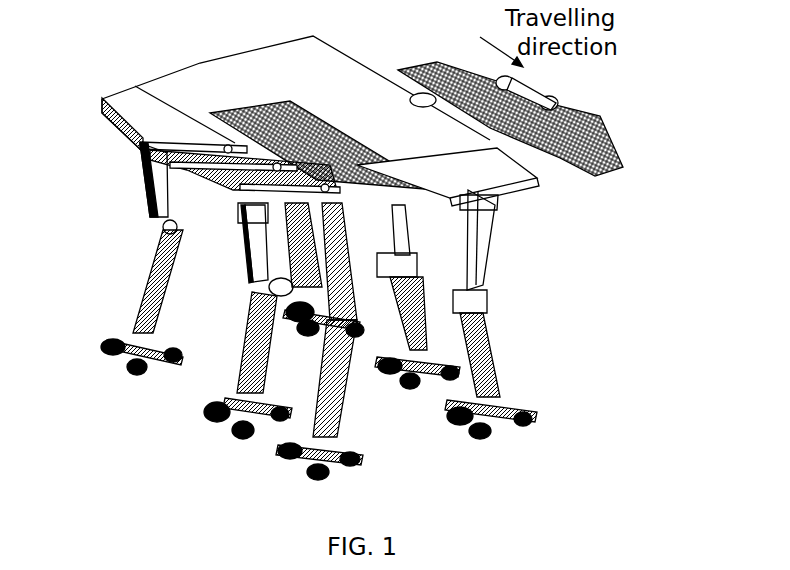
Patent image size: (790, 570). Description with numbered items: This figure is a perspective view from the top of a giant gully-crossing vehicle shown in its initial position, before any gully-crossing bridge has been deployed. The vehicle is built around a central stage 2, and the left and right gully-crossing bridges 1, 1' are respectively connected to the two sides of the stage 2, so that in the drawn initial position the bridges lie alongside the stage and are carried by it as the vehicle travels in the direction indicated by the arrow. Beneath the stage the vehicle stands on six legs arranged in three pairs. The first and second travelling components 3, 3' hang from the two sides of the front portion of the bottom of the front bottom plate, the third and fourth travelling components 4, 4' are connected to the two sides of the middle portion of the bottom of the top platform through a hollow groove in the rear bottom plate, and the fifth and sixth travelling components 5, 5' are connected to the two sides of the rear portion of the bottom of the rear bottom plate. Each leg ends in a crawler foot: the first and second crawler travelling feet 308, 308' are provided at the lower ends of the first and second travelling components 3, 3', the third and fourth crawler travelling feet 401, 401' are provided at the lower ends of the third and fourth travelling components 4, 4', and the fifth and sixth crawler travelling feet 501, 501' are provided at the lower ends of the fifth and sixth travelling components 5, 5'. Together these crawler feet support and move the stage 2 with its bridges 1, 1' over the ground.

The left gully-crossing bridge 1 is at (543, 102).
The right gully-crossing bridge 1' is at (524, 143).
The stage 2 is at (483, 165).
The first travelling component 3 is at (574, 240).
The second travelling component 3' is at (154, 210).
The third travelling component 4 is at (570, 292).
The fourth travelling component 4' is at (166, 250).
The fifth travelling component 5 is at (574, 355).
The sixth travelling component 5' is at (111, 238).
The first crawler travelling foot 308 is at (570, 412).
The second crawler travelling foot 308' is at (490, 341).
The third crawler travelling foot 401 is at (250, 306).
The fourth crawler travelling foot 401' is at (166, 421).
The fifth crawler travelling foot 501 is at (202, 298).
The sixth crawler travelling foot 501' is at (111, 355).